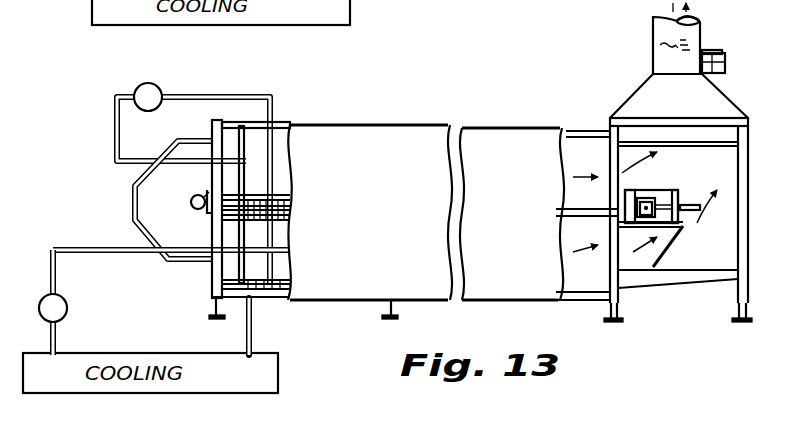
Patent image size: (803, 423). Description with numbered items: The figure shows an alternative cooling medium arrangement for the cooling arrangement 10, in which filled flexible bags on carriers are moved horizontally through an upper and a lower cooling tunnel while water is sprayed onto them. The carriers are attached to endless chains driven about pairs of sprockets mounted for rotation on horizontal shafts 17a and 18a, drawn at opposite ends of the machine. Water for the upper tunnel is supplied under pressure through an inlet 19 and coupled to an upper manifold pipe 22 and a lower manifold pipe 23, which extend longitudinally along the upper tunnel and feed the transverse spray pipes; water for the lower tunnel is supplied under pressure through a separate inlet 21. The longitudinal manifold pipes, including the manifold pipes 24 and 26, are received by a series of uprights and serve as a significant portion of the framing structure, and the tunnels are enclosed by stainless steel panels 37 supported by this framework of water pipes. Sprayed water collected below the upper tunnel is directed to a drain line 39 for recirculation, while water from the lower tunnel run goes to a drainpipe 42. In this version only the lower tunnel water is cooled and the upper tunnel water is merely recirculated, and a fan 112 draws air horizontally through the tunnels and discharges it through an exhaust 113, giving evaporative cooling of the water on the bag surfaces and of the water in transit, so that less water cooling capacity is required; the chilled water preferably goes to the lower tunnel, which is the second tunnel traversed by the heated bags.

The cooling arrangement 10 is at (440, 105).
The horizontal shaft 17a is at (191, 206).
The horizontal shaft 18a is at (648, 197).
The inlet 19 is at (240, 160).
The inlet 21 is at (288, 250).
The upper manifold pipe 22 is at (283, 125).
The lower manifold pipe 23 is at (287, 193).
The longitudinal manifold pipe 24 is at (287, 204).
The longitudinal manifold pipe 26 is at (285, 276).
The stainless steel panels 37 is at (428, 187).
The drain line 39 is at (287, 218).
The drainpipe 42 is at (258, 338).
The fan 112 is at (730, 53).
The exhaust 113 is at (693, 22).